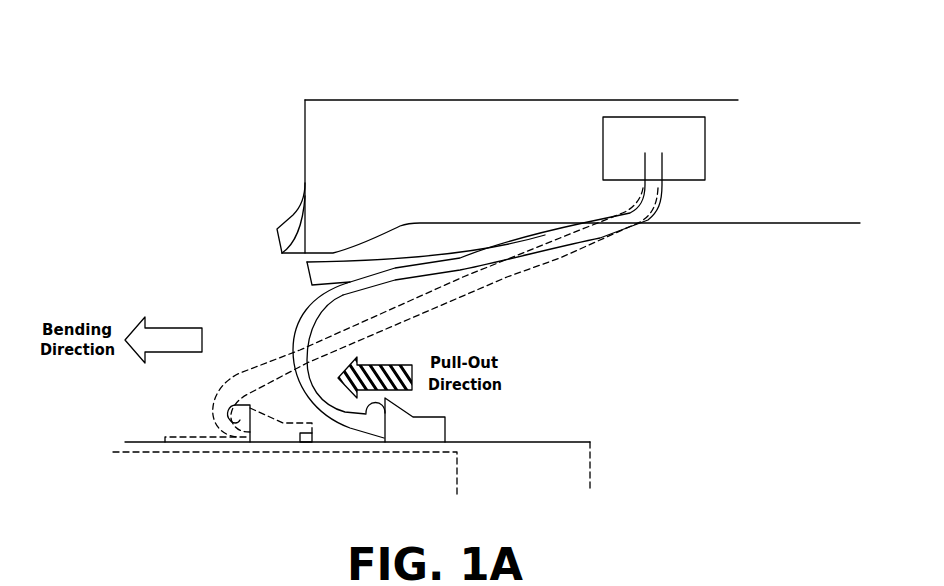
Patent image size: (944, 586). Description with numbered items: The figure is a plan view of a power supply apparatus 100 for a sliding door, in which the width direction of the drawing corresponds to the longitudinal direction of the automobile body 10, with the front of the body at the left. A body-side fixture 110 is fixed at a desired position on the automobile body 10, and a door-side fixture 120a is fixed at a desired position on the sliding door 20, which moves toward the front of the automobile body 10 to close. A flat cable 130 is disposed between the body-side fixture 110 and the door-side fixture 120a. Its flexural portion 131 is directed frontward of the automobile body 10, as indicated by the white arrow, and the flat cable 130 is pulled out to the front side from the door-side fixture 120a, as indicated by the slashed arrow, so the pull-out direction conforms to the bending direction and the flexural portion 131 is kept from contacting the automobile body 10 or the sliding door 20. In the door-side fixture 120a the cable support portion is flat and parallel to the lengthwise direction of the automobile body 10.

The power supply apparatus 100 is at (614, 77).
The automobile body 10 is at (327, 202).
The body-side fixture 110 is at (693, 180).
The flat cable 130 is at (493, 252).
The flexural portion 131 is at (297, 352).
The door-side fixture 120a is at (445, 417).
The sliding door 20 is at (568, 463).